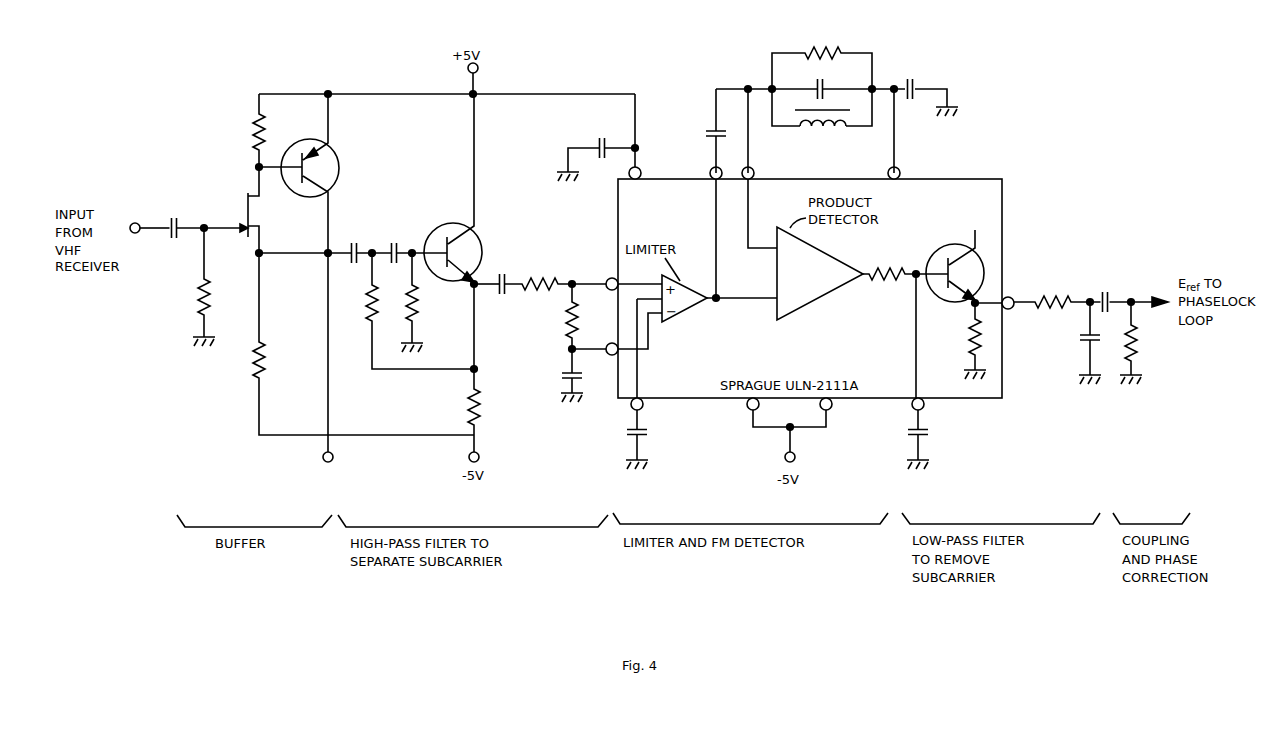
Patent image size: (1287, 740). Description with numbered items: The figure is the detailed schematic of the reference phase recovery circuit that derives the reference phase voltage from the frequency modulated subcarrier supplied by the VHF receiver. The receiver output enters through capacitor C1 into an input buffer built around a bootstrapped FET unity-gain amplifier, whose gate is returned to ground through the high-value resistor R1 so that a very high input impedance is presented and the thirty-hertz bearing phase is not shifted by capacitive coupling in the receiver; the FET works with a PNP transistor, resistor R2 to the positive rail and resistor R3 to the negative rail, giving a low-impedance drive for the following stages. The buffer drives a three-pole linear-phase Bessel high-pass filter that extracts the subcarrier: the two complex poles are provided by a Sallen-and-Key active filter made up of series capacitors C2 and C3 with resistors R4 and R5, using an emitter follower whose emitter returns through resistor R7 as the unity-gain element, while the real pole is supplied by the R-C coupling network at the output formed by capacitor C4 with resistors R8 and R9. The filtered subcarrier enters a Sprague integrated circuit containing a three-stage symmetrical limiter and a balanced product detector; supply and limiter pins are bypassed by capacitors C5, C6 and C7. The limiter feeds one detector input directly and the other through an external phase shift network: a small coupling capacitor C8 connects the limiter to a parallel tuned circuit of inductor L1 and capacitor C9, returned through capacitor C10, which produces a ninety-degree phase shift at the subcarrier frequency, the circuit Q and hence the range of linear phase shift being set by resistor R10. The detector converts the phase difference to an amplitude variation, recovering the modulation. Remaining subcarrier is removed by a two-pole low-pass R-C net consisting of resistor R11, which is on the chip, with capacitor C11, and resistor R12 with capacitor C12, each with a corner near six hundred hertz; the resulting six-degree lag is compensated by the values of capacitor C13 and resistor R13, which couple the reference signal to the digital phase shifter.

The input coupling capacitor C1 is at (167, 210).
The input resistor R1 is at (190, 287).
The buffer resistor R2 is at (240, 130).
The buffer resistor R3 is at (363, 344).
The high-pass filter capacitor C2 is at (357, 220).
The high-pass filter capacitor C3 is at (397, 220).
The high-pass filter resistor R4 is at (420, 311).
The high-pass filter resistor R5 is at (424, 302).
The output coupling capacitor C4 is at (506, 249).
The emitter resistor R7 is at (489, 368).
The coupling resistor R8 is at (540, 268).
The coupling resistor R9 is at (554, 316).
The bypass capacitor C5 is at (596, 137).
The bypass capacitor C6 is at (582, 375).
The bypass capacitor C7 is at (624, 439).
The coupling capacitor C8 is at (694, 131).
The tuned circuit capacitor C9 is at (824, 84).
The Q-setting resistor R10 is at (822, 59).
The tuned circuit inductor L1 is at (822, 120).
The bypass capacitor C10 is at (908, 88).
The low-pass filter resistor R11 is at (887, 257).
The low-pass filter capacitor C11 is at (935, 439).
The low-pass filter resistor R12 is at (1053, 283).
The low-pass filter capacitor C12 is at (1067, 343).
The coupling capacitor C13 is at (1108, 283).
The coupling resistor R13 is at (1148, 343).